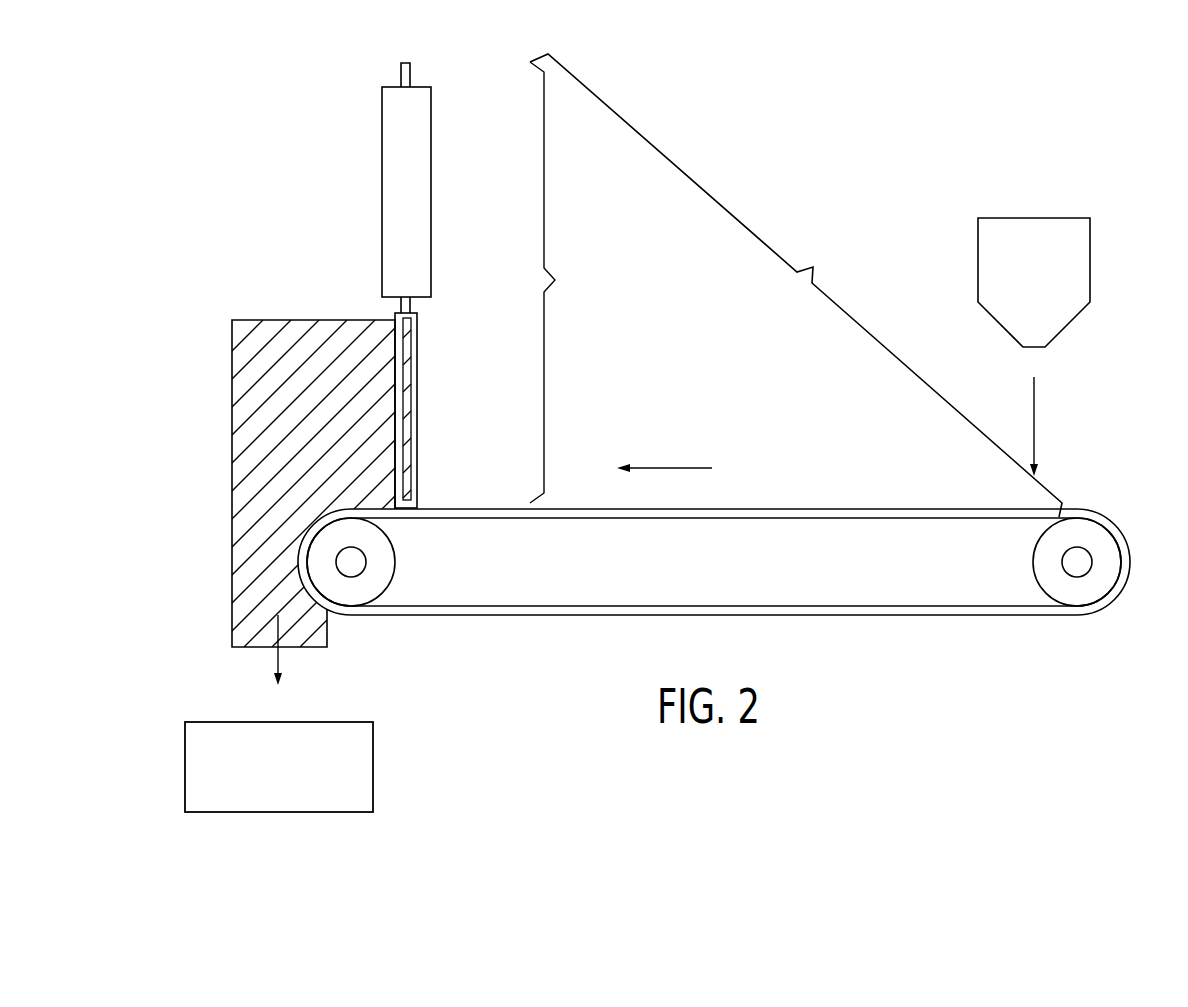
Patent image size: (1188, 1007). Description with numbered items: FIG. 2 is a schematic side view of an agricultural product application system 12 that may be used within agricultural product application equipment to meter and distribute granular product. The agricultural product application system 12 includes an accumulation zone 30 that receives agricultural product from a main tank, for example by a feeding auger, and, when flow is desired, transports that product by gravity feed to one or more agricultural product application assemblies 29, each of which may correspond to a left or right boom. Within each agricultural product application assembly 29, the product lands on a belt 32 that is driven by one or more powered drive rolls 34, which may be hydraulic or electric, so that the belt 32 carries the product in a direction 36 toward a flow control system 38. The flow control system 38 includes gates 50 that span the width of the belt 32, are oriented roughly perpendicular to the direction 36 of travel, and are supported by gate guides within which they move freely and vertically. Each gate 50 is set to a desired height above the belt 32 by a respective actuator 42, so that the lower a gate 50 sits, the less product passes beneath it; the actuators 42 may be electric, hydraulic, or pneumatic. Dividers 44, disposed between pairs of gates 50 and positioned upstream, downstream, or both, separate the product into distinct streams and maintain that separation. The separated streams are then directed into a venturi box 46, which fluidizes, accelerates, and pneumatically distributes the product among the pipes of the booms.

The agricultural product application system 12 is at (832, 148).
The agricultural product application assembly 29 is at (796, 285).
The accumulation zone 30 is at (1072, 263).
The belt 32 is at (822, 508).
The powered drive roll 34 is at (1088, 590).
The direction 36 is at (673, 468).
The flow control system 38 is at (560, 282).
The actuator 42 is at (405, 63).
The divider 44 is at (268, 330).
The venturi box 46 is at (185, 767).
The gate 50 is at (412, 377).